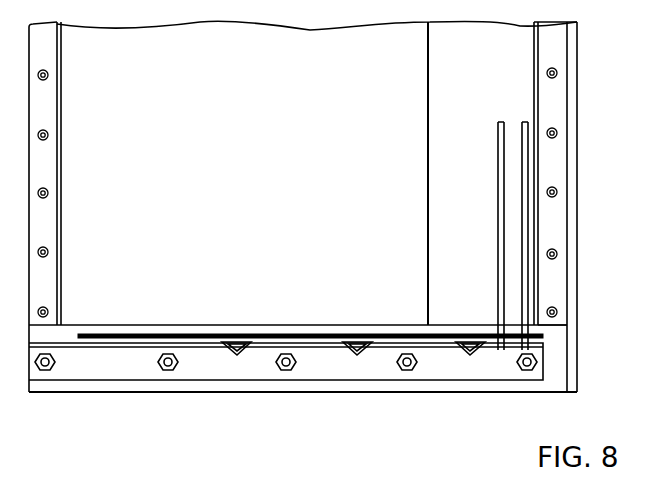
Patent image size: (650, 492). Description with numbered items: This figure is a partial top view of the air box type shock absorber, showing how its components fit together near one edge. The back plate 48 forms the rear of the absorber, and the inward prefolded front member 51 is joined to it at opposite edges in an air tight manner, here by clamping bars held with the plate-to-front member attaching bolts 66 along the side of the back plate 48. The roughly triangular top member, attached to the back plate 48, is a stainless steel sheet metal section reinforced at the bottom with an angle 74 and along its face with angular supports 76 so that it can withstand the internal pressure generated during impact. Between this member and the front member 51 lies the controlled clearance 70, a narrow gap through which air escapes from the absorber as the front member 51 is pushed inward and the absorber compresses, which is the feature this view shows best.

The back plate member 48 is at (568, 374).
The inward prefolded front member 51 is at (354, 150).
The plate-to-front member attaching bolts 66 is at (557, 192).
The controlled clearances 70 is at (144, 320).
The angle 74 is at (460, 368).
The angular supports 76 is at (362, 356).